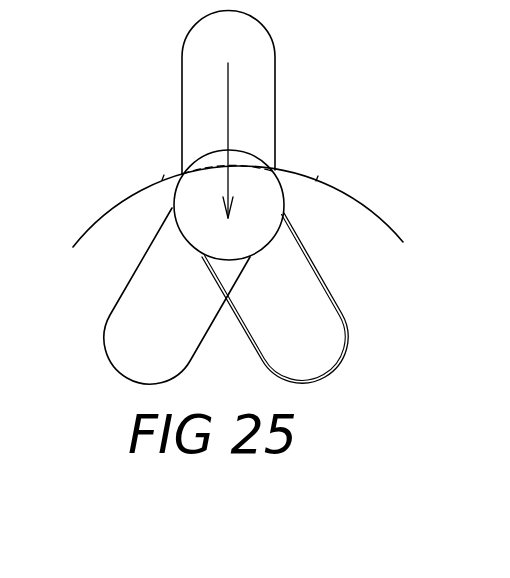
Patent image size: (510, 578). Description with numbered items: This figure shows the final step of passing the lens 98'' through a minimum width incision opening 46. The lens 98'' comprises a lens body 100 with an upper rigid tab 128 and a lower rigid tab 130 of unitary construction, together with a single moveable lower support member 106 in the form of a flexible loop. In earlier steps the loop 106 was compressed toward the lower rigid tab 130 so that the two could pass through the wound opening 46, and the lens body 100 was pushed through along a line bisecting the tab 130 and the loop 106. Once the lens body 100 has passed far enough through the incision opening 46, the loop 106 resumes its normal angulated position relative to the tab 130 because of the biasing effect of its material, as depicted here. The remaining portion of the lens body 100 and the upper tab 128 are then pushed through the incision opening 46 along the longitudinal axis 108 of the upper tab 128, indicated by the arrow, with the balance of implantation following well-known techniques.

The incision opening 46 is at (182, 174).
The upper rigid tab 128 is at (267, 35).
The longitudinal axis 108 is at (228, 85).
The lens 98'' is at (327, 119).
The lens body 100 is at (279, 207).
The lower rigid tab 130 is at (112, 350).
The lower support member 106 is at (350, 336).